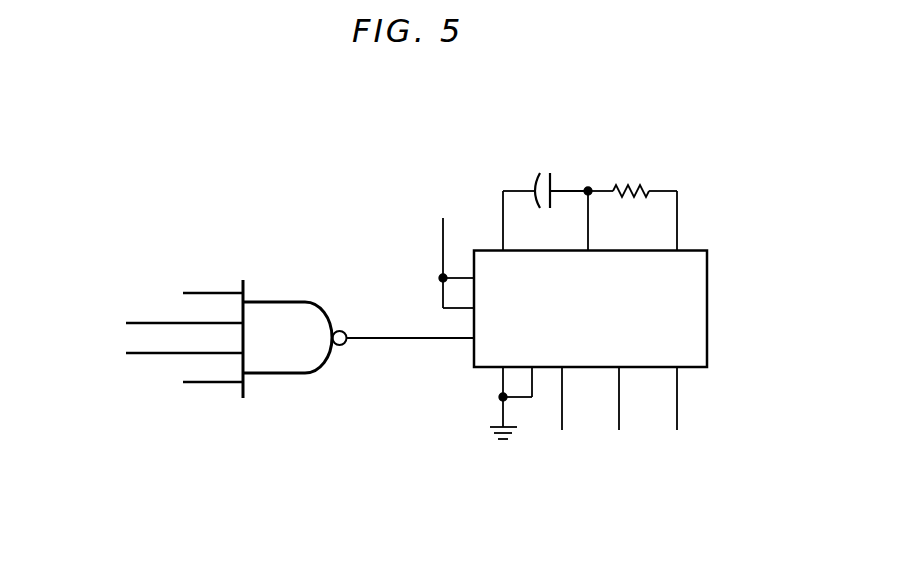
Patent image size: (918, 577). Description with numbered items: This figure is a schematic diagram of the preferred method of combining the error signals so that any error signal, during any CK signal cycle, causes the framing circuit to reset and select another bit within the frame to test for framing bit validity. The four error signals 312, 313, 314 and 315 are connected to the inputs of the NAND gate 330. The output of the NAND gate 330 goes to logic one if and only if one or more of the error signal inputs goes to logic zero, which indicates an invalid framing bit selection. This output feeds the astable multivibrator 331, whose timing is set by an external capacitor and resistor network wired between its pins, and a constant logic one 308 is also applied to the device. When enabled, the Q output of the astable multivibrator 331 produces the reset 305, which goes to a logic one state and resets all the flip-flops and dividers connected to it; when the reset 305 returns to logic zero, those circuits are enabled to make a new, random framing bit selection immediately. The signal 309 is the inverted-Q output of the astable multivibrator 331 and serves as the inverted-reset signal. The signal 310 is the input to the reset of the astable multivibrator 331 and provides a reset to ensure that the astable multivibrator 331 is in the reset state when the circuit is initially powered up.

The reset signal 305 is at (562, 430).
The logic one signal 308 is at (443, 234).
The inverted-reset signal 309 is at (619, 430).
The astable multivibrator reset input signal 310 is at (677, 410).
The error signal 312 is at (215, 292).
The error signal 313 is at (155, 354).
The error signal 314 is at (155, 322).
The error signal 315 is at (215, 383).
The NAND gate 330 is at (275, 315).
The astable multivibrator 331 is at (707, 250).